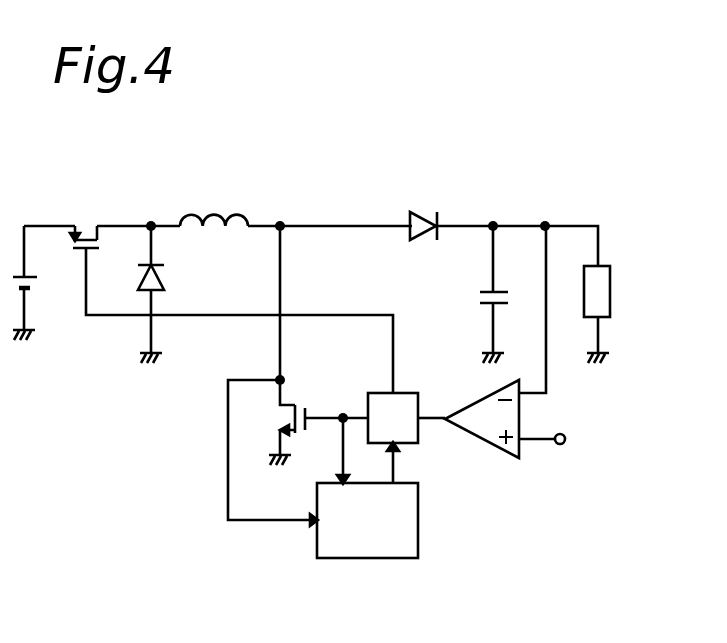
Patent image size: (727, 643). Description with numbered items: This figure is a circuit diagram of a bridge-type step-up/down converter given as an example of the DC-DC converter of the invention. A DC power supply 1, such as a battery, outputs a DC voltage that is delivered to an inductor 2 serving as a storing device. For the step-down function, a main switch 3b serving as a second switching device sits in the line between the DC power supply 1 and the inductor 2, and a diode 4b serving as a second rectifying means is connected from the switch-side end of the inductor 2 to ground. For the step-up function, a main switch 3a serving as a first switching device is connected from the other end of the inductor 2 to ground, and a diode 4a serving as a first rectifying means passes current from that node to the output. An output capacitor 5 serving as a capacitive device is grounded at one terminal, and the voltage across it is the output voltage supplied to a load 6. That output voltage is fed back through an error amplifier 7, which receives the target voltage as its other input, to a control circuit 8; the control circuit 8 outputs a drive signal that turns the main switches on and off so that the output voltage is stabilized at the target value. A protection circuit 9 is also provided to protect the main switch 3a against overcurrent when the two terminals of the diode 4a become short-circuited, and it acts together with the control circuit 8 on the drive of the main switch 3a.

The DC power supply 1 is at (28, 290).
The inductor 2 is at (230, 212).
The main switch 3a is at (298, 401).
The main switch 3b is at (86, 222).
The diode 4a is at (432, 212).
The diode 4b is at (165, 283).
The output capacitor 5 is at (480, 300).
The load 6 is at (605, 320).
The error amplifier 7 is at (490, 447).
The control circuit 8 is at (420, 390).
The protection circuit 9 is at (419, 540).